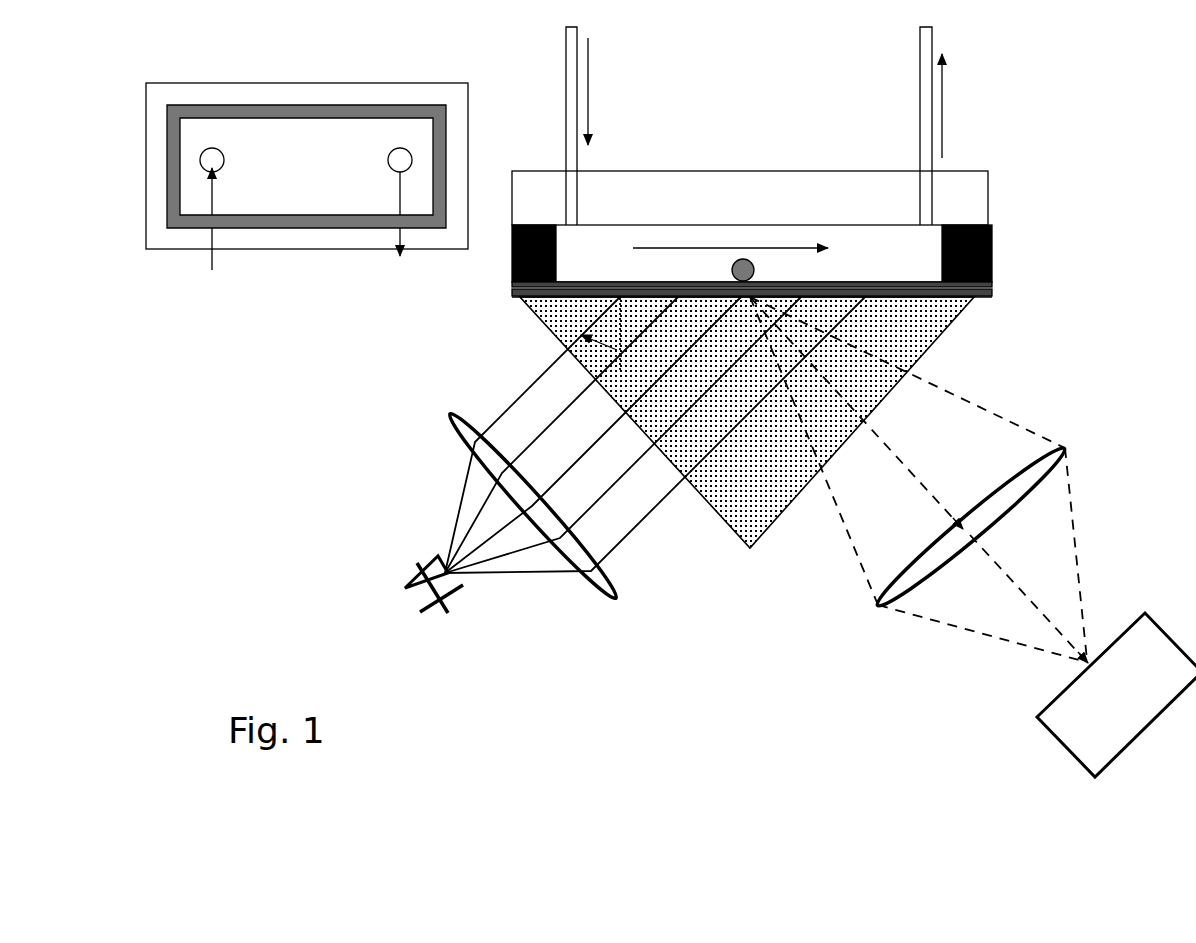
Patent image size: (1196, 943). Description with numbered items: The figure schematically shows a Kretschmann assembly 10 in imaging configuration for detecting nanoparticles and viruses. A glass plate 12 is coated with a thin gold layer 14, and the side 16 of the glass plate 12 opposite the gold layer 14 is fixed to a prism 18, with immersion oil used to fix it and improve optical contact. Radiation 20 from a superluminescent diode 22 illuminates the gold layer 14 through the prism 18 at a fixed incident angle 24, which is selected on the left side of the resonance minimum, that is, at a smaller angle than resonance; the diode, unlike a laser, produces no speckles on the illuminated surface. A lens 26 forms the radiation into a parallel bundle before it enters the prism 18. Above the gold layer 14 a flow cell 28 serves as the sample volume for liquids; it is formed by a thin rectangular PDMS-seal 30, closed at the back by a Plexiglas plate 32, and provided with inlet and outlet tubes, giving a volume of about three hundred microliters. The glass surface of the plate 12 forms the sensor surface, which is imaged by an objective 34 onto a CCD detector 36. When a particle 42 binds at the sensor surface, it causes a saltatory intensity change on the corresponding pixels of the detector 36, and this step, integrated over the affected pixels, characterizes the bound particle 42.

The Kretschmann assembly 10 is at (748, 657).
The glass plate 12 is at (966, 298).
The gold layer 14 is at (991, 288).
The side of the glass plate 16 is at (952, 302).
The prism 18 is at (752, 510).
The radiation 20 is at (645, 527).
The superluminescent diode 22 is at (418, 594).
The incident angle 24 is at (590, 351).
The lens 26 is at (595, 597).
The flow cell 28 is at (293, 154).
The PDMS-seal 30 is at (320, 229).
The Plexiglas plate 32 is at (991, 190).
The objective 34 is at (1010, 499).
The CCD detector 36 is at (1046, 740).
The particle 42 is at (746, 259).